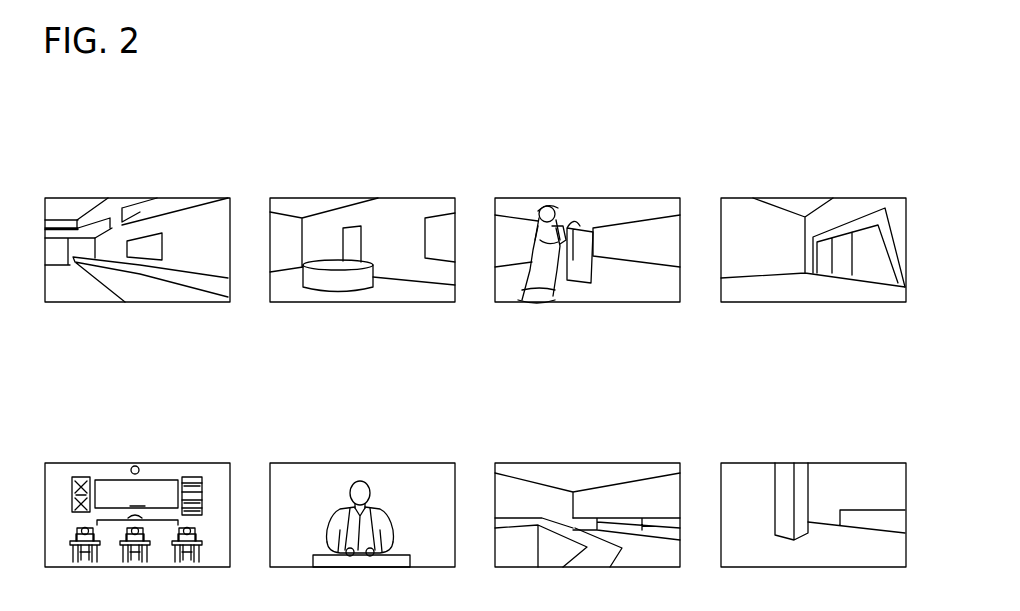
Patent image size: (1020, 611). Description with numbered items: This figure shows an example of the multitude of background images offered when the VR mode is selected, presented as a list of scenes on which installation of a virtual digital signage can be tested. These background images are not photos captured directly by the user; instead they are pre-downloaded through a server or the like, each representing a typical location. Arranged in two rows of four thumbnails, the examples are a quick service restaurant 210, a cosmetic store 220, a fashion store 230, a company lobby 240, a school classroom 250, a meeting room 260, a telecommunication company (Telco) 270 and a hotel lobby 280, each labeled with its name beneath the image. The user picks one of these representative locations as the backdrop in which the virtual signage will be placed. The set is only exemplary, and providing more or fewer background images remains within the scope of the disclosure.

The restaurant (Quick Service Restaurant) background image 210 is at (191, 198).
The cosmetic store (Cosmetic) background image 220 is at (416, 198).
The fashion store (Fashion) background image 230 is at (641, 198).
The company lobby background image 240 is at (866, 198).
The school (Classroom) background image 250 is at (191, 463).
The meeting room background image 260 is at (416, 463).
The telecommunication company (Telco) background image 270 is at (641, 463).
The hotel lobby background image 280 is at (866, 463).